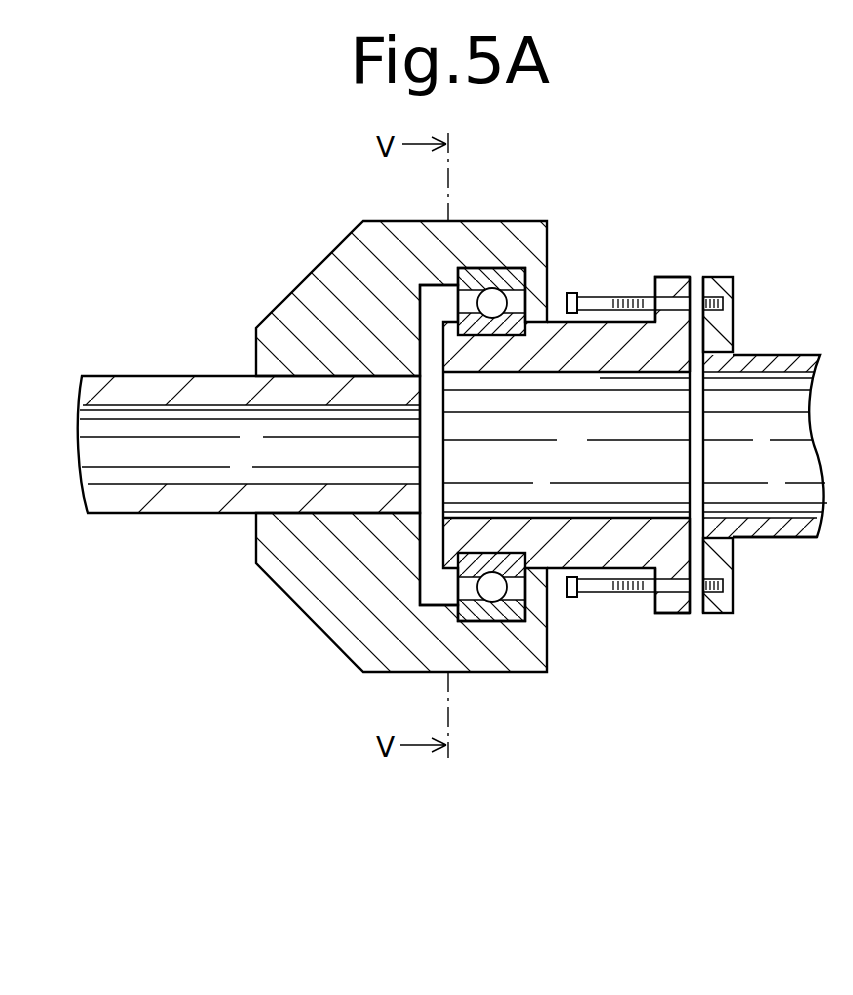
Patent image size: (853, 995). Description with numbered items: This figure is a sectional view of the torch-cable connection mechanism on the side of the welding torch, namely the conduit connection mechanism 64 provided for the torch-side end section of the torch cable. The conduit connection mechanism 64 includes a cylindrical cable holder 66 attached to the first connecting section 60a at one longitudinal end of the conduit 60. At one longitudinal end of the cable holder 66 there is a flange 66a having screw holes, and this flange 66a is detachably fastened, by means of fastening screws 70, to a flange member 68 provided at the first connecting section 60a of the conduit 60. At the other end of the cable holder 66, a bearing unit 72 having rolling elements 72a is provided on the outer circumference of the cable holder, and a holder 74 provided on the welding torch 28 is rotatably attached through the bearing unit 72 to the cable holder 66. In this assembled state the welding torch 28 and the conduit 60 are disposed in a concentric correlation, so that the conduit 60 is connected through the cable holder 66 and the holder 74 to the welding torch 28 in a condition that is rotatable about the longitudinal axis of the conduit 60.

The welding torch 28 is at (130, 497).
The conduit 60 is at (778, 352).
The first connecting section 60a is at (788, 538).
The conduit connection mechanism 64 is at (652, 207).
The cable holder 66 is at (558, 347).
The flange 66a is at (664, 282).
The flange member 68 is at (728, 538).
The fastening screws 70 is at (597, 297).
The bearing unit 72 is at (533, 586).
The rolling elements 72a is at (492, 590).
The holder 74 is at (351, 617).